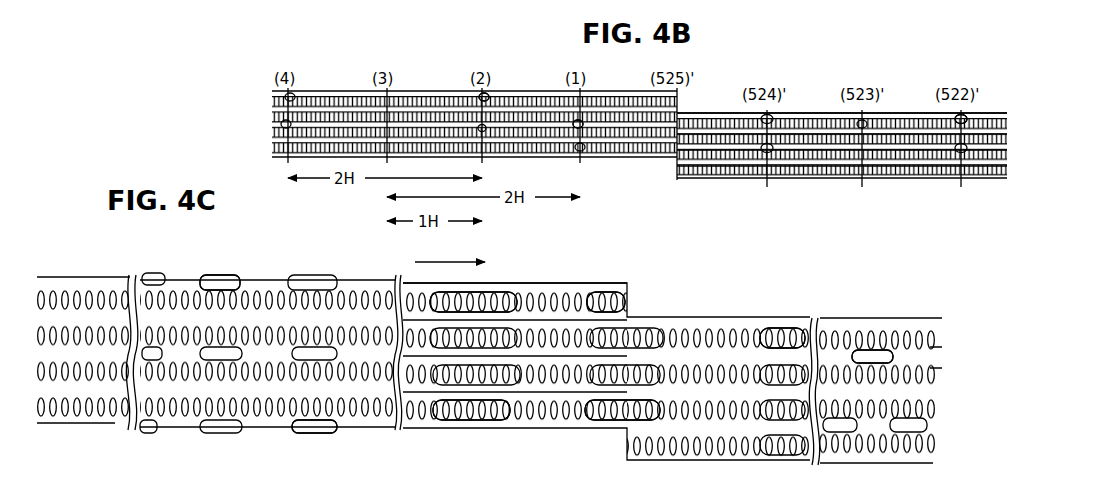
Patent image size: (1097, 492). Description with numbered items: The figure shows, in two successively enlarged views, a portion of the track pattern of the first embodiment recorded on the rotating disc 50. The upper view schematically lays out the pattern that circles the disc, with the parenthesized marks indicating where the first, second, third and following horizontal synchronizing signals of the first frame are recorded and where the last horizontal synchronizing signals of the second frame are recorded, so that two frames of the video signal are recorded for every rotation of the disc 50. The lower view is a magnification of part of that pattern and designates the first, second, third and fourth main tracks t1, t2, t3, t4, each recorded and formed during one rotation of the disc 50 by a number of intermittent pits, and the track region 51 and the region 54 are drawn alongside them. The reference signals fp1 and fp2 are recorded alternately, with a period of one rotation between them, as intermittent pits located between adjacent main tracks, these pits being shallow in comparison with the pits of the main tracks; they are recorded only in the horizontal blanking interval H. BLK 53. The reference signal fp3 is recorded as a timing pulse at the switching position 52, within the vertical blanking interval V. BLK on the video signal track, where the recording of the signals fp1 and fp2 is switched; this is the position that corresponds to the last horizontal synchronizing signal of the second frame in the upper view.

In FIG. 4C, the disc 50 is at (900, 316).
In FIG. 4B, the recording track 51 is at (757, 192).
In FIG. 4C, the recording track 51 is at (583, 293).
In FIG. 4C, the switching position 52 is at (397, 477).
In FIG. 4C, the horizontal blanking interval H. BLK 53 is at (397, 267).
In FIG. 4C, the video signal region 54 is at (105, 437).
In FIG. 4B, the reference signal fp1 is at (970, 111).
In FIG. 4C, the reference signal fp1 is at (877, 340).
In FIG. 4B, the reference signal fp2 is at (870, 113).
In FIG. 4C, the reference signal fp2 is at (310, 435).
In FIG. 4C, the reference signal fp3 is at (804, 330).
In FIG. 4B, the first main track t1 is at (686, 108).
In FIG. 4C, the first main track t1 is at (630, 303).
In FIG. 4B, the second main track t2 is at (1010, 142).
In FIG. 4C, the second main track t2 is at (957, 375).
In FIG. 4B, the third main track t3 is at (1010, 158).
In FIG. 4C, the third main track t3 is at (681, 370).
In FIG. 4B, the fourth main track t4 is at (1008, 174).
In FIG. 4C, the fourth main track t4 is at (563, 418).